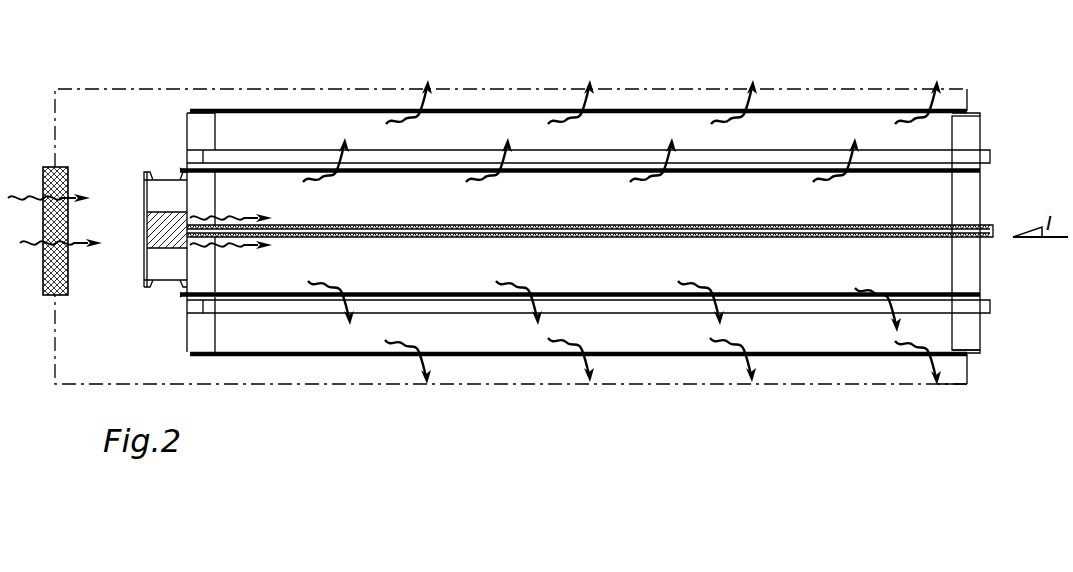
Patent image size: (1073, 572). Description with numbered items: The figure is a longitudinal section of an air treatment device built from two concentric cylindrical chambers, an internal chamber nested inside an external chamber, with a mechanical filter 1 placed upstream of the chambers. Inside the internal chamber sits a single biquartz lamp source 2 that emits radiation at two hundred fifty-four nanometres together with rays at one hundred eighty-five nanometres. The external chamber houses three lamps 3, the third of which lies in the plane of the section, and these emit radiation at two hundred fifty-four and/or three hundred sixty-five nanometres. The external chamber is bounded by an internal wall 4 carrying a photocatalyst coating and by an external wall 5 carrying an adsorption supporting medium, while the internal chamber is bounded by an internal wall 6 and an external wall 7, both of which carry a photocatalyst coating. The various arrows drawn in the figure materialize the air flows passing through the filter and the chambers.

The mechanical filter 1 is at (52, 166).
The biquartz lamp source 2 is at (282, 225).
The lamps 3 is at (990, 160).
The internal wall of the external chamber 4 is at (517, 114).
The external wall of the external chamber 5 is at (523, 110).
The internal wall of the internal chamber 6 is at (753, 173).
The external wall of the internal chamber 7 is at (735, 167).